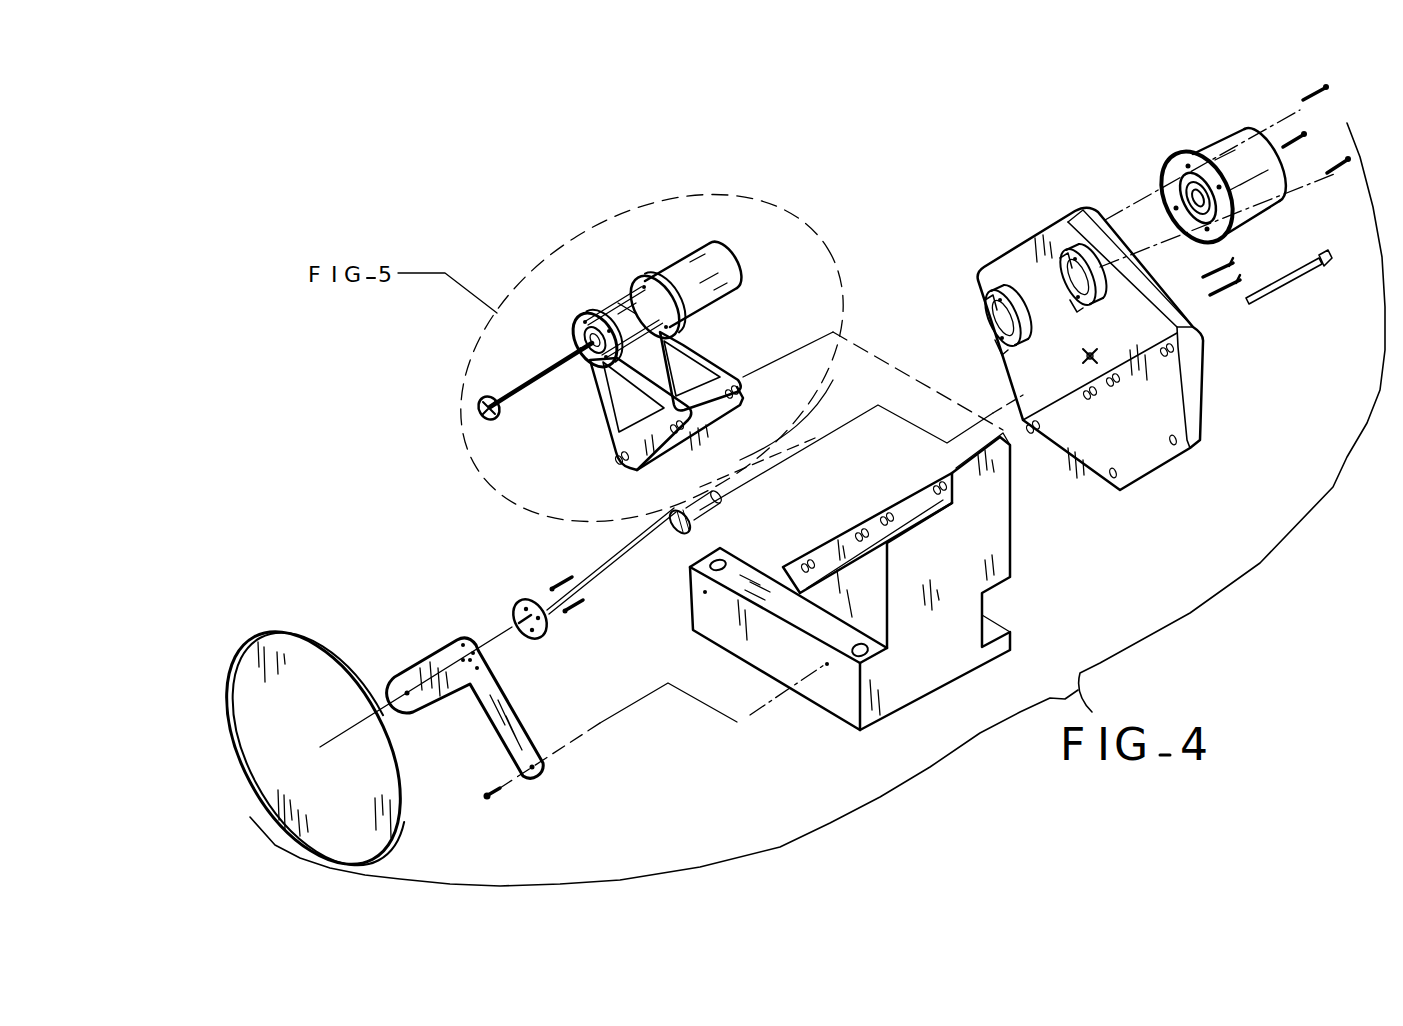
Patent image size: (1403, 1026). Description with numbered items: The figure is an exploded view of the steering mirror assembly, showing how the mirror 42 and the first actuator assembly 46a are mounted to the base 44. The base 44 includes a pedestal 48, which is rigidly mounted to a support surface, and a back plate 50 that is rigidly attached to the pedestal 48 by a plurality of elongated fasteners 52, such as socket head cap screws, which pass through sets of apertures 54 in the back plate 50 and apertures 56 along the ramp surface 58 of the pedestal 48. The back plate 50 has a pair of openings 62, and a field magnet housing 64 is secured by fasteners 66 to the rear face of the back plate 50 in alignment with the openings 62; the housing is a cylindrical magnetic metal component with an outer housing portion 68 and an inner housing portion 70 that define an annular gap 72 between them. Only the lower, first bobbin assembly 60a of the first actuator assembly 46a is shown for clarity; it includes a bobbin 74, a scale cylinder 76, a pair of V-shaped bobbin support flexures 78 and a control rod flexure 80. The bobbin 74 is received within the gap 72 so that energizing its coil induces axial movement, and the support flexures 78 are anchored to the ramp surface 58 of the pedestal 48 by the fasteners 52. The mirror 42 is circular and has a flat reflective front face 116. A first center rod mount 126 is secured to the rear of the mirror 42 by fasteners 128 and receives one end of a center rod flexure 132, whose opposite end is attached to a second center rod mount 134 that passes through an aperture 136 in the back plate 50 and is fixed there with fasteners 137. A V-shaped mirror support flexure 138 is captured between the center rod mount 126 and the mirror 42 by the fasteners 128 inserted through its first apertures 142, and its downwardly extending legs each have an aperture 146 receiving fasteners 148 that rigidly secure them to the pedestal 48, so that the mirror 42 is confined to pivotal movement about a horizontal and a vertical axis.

The mirror 42 is at (341, 748).
The base 44 is at (1113, 575).
The first actuator assembly 46a is at (622, 325).
The pedestal 48 is at (943, 650).
The back plate 50 is at (1104, 356).
The elongated fasteners 52 is at (1306, 276).
The apertures 54 is at (1172, 352).
The apertures 56 is at (948, 488).
The ramp surface 58 is at (907, 497).
The first bobbin assembly 60a is at (622, 325).
The openings 62 is at (1007, 277).
The field magnet housing 64 is at (1218, 178).
The fasteners 66 is at (1287, 125).
The outer housing portion 68 is at (1218, 190).
The inner housing portion 70 is at (1187, 197).
The gap 72 is at (1187, 100).
The bobbin 74 is at (705, 268).
The scale cylinder 76 is at (613, 298).
The bobbin support flexures 78 is at (707, 357).
The control rod flexure 80 is at (543, 372).
The front face 116 is at (350, 808).
The first center rod mount 126 is at (527, 600).
The fasteners 128 is at (573, 613).
The center rod flexure 132 is at (634, 558).
The second center rod mount 134 is at (693, 513).
The aperture 136 is at (1093, 354).
The fasteners 137 is at (1233, 263).
The mirror support flexure 138 is at (488, 693).
The first apertures 142 is at (462, 640).
The aperture 146 is at (401, 677).
The fasteners 148 is at (498, 794).